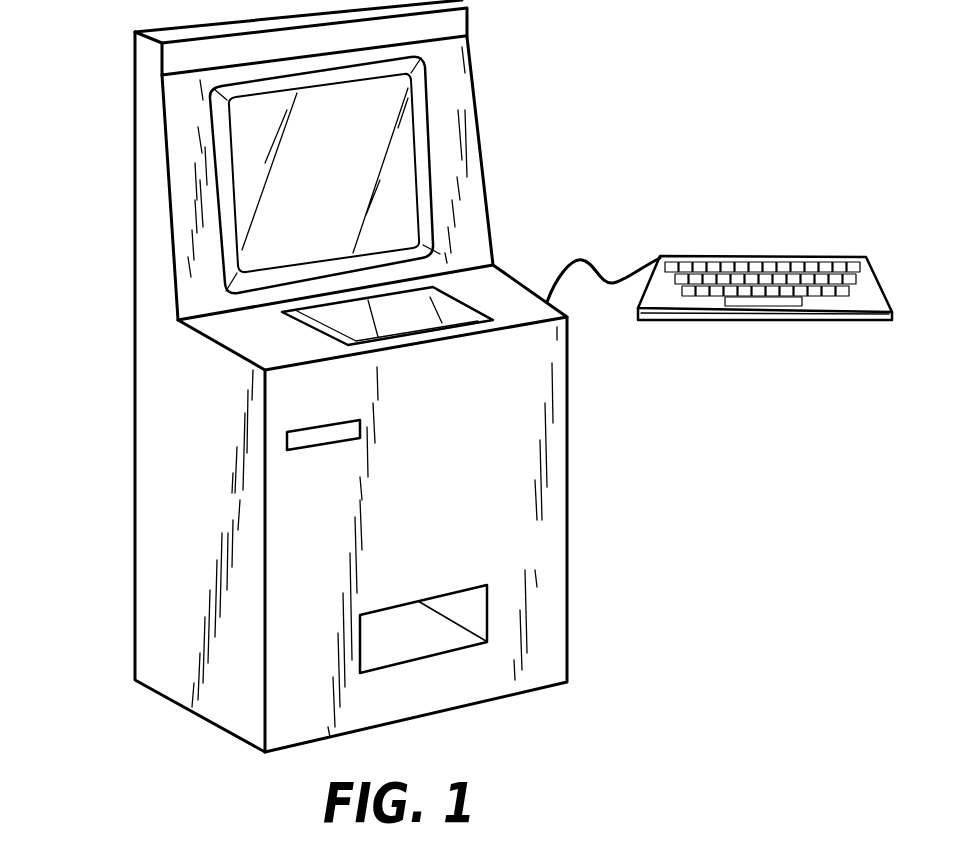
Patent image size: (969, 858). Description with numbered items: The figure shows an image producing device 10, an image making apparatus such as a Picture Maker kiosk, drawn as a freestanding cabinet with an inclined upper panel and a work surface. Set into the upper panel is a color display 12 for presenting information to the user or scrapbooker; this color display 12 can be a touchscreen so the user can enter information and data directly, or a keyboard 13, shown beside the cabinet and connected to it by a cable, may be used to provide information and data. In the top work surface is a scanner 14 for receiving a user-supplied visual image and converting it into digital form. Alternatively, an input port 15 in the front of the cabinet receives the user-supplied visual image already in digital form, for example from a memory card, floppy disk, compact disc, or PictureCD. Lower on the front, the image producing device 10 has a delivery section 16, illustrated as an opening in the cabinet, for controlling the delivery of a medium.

The image producing device 10 is at (147, 122).
The color display 12 is at (403, 143).
The keyboard 13 is at (743, 256).
The scanner 14 is at (467, 313).
The input port 15 is at (340, 420).
The delivery section 16 is at (470, 605).